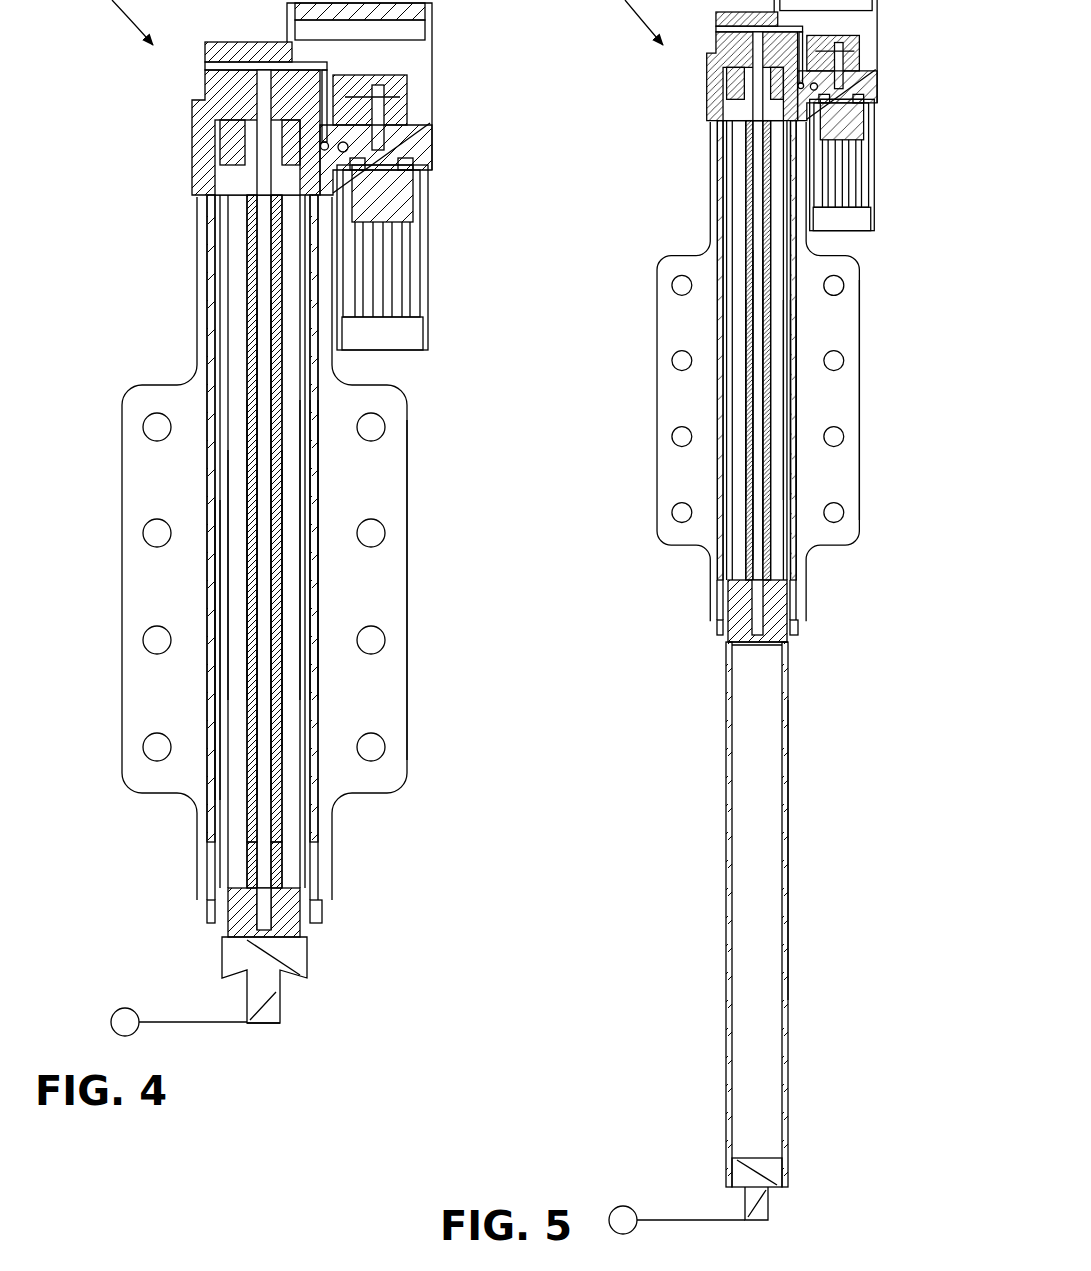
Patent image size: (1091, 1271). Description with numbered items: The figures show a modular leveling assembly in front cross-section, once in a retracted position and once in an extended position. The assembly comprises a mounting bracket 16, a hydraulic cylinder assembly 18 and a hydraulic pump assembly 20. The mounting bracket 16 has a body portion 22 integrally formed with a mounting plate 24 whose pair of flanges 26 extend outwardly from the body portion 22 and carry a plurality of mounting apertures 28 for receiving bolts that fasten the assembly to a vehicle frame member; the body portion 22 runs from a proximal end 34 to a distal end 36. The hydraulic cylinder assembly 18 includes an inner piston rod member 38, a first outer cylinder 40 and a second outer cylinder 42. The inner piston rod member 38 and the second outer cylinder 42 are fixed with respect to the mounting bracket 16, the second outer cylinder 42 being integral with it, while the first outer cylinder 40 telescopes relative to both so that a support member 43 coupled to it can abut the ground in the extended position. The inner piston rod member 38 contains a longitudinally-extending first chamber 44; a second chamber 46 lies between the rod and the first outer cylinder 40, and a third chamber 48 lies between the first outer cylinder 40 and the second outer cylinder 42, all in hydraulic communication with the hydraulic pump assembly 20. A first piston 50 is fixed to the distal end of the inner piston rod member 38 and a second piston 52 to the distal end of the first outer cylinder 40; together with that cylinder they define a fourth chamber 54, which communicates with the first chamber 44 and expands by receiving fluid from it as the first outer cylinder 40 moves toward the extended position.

In FIG. 4, the mounting bracket 16 is at (412, 452).
In FIG. 5, the mounting bracket 16 is at (864, 298).
In FIG. 4, the hydraulic cylinder assembly 18 is at (328, 495).
In FIG. 5, the hydraulic cylinder assembly 18 is at (800, 340).
In FIG. 4, the hydraulic pump assembly 20 is at (443, 107).
In FIG. 5, the hydraulic pump assembly 20 is at (888, 75).
In FIG. 4, the body portion 22 is at (312, 522).
In FIG. 5, the body portion 22 is at (797, 412).
In FIG. 4, the mounting plate 24 is at (410, 558).
In FIG. 5, the mounting plate 24 is at (860, 452).
In FIG. 4, the flanges 26 is at (145, 720).
In FIG. 5, the flanges 26 is at (830, 488).
In FIG. 4, the mounting apertures 28 is at (378, 418).
In FIG. 5, the mounting apertures 28 is at (838, 278).
In FIG. 4, the proximal end 34 is at (205, 215).
In FIG. 5, the proximal end 34 is at (712, 175).
In FIG. 4, the distal end 36 is at (322, 890).
In FIG. 5, the distal end 36 is at (795, 605).
In FIG. 4, the inner piston rod member 38 is at (245, 465).
In FIG. 5, the inner piston rod member 38 is at (745, 405).
In FIG. 4, the first outer cylinder 40 is at (222, 672).
In FIG. 5, the first outer cylinder 40 is at (788, 980).
In FIG. 4, the second outer cylinder 42 is at (235, 580).
In FIG. 4, the support member 43 is at (275, 1013).
In FIG. 5, the support member 43 is at (762, 1215).
In FIG. 4, the first chamber 44 is at (262, 487).
In FIG. 5, the first chamber 44 is at (760, 328).
In FIG. 4, the second chamber 46 is at (245, 613).
In FIG. 4, the third chamber 48 is at (228, 700).
In FIG. 5, the first piston 50 is at (775, 648).
In FIG. 4, the second piston 52 is at (305, 968).
In FIG. 5, the second piston 52 is at (772, 1178).
In FIG. 5, the fourth chamber 54 is at (790, 800).